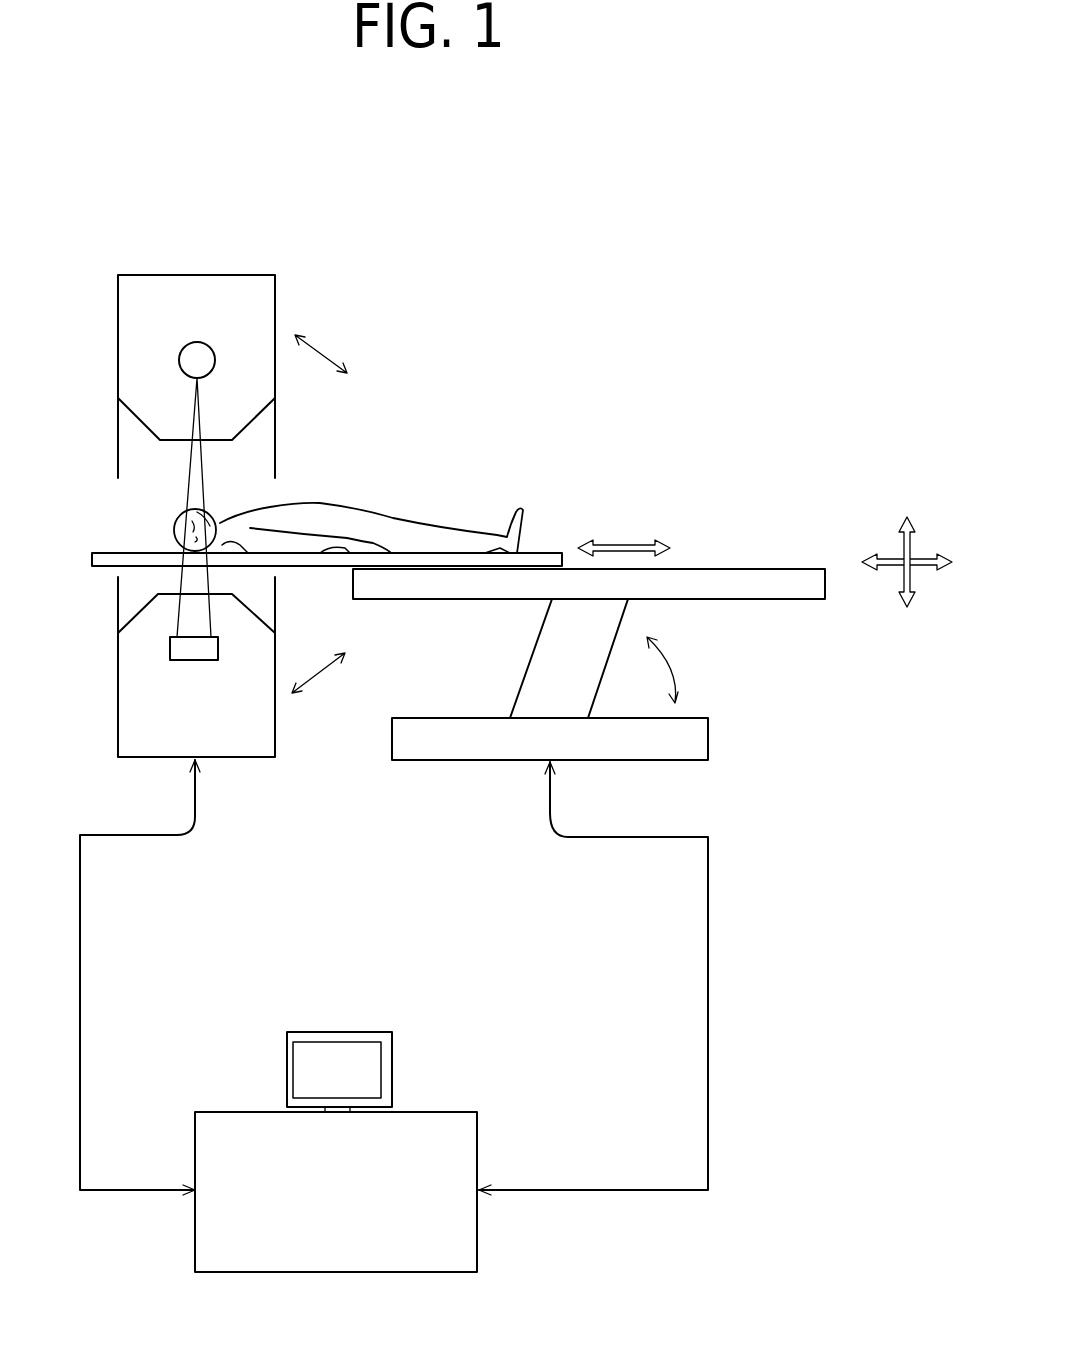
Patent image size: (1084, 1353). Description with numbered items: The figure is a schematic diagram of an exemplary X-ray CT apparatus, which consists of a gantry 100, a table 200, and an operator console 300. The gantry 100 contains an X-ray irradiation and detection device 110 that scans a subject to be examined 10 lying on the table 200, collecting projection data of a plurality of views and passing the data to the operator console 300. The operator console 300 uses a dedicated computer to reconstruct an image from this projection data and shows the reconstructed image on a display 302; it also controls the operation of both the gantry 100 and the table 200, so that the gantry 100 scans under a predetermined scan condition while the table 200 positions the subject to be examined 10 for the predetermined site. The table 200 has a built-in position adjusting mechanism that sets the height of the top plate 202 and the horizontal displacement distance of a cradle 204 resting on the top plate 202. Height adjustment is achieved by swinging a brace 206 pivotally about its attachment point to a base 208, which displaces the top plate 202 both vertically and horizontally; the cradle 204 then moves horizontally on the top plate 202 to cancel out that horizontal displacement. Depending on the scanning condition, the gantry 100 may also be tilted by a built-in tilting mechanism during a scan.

The subject to be examined 10 is at (288, 520).
The gantry 100 is at (186, 254).
The X-ray irradiation and detection device 110 is at (205, 345).
The table 200 is at (522, 600).
The top plate 202 is at (685, 582).
The cradle 204 is at (455, 553).
The brace 206 is at (565, 693).
The base 208 is at (623, 740).
The operator console 300 is at (457, 1100).
The display 302 is at (370, 1032).